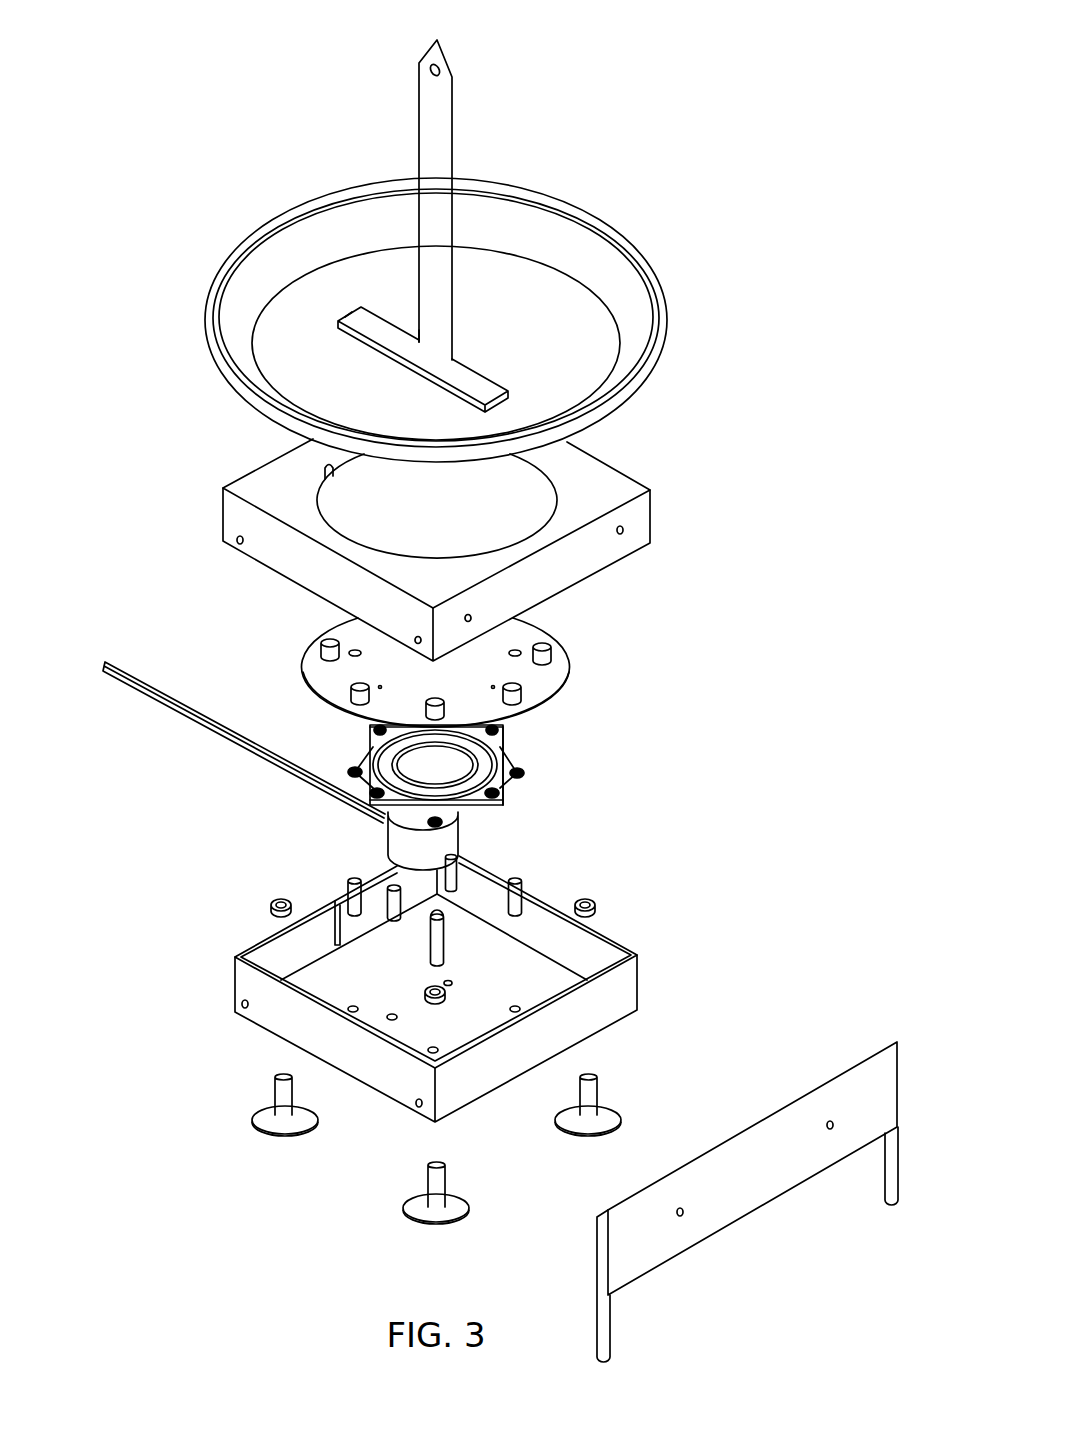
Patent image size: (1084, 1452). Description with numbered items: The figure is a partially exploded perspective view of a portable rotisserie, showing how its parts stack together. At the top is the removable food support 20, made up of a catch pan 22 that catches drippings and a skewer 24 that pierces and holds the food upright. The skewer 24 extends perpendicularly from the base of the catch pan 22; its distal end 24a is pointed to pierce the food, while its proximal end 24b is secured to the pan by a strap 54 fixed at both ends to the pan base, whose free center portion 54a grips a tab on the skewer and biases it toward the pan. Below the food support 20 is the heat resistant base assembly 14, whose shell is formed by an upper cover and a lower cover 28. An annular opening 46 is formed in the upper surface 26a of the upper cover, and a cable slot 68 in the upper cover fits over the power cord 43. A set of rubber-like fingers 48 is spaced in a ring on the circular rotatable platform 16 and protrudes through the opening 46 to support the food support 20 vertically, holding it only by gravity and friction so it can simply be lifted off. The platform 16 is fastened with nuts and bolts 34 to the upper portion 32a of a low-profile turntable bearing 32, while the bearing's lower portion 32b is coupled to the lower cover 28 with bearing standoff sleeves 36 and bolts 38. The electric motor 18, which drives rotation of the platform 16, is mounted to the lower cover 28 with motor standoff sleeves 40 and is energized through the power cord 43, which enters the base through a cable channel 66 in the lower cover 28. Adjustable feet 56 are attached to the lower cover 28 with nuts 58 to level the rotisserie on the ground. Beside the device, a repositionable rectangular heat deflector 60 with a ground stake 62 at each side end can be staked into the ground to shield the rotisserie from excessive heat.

The base assembly 14 is at (745, 433).
The food support 20 is at (667, 182).
The catch pan 22 is at (652, 280).
The skewer 24 is at (434, 141).
The distal end 24a is at (462, 55).
The proximal end 24b is at (466, 333).
The strap 54 is at (484, 379).
The center portion 54a is at (380, 363).
The upper surface 26a is at (568, 505).
The opening 46 is at (502, 545).
The cable slot 68 is at (340, 488).
The platform 16 is at (566, 675).
The fingers 48 is at (322, 650).
The turntable bearing 32 is at (364, 764).
The upper portion 32a is at (496, 742).
The lower portion 32b is at (533, 773).
The nuts and bolts 34 is at (377, 797).
The bolts 38 is at (350, 778).
The power cord 43 is at (173, 700).
The motor 18 is at (406, 857).
The lower cover 28 is at (240, 987).
The bearing standoff sleeves 36 is at (355, 903).
The motor standoff sleeves 40 is at (452, 880).
The nuts 58 is at (269, 908).
The feet 56 is at (280, 1102).
The cable channel 66 is at (341, 952).
The heat deflector 60 is at (777, 1140).
The ground stake 62 is at (895, 1183).